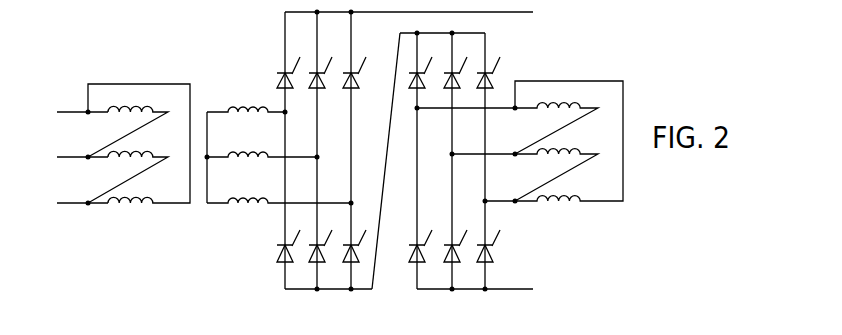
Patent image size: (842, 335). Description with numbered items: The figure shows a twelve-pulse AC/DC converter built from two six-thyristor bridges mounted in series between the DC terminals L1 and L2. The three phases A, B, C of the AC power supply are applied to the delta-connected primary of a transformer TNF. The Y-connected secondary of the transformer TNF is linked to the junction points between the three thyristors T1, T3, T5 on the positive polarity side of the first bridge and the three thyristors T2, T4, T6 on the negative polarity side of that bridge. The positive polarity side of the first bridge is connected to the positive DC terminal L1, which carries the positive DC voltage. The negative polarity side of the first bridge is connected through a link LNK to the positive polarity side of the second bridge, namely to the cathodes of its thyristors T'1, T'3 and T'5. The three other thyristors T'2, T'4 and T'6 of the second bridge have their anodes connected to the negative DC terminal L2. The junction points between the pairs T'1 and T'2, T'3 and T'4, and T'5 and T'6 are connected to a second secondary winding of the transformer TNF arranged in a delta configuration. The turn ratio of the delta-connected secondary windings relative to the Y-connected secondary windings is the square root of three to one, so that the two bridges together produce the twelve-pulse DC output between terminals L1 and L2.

The phase A is at (75, 112).
The phase B is at (75, 157).
The phase C is at (75, 203).
The transformer TNF is at (212, 229).
The DC terminal L1 is at (449, 15).
The DC terminal L2 is at (449, 290).
The link LNK is at (387, 145).
The thyristor T1 is at (279, 73).
The thyristor T2 is at (279, 246).
The thyristor T3 is at (326, 78).
The thyristor T4 is at (328, 249).
The thyristor T5 is at (360, 78).
The thyristor T6 is at (361, 246).
The thyristor T'1 is at (427, 63).
The thyristor T'2 is at (409, 243).
The thyristor T'3 is at (460, 63).
The thyristor T'4 is at (446, 227).
The thyristor T'5 is at (496, 62).
The thyristor T'6 is at (499, 238).